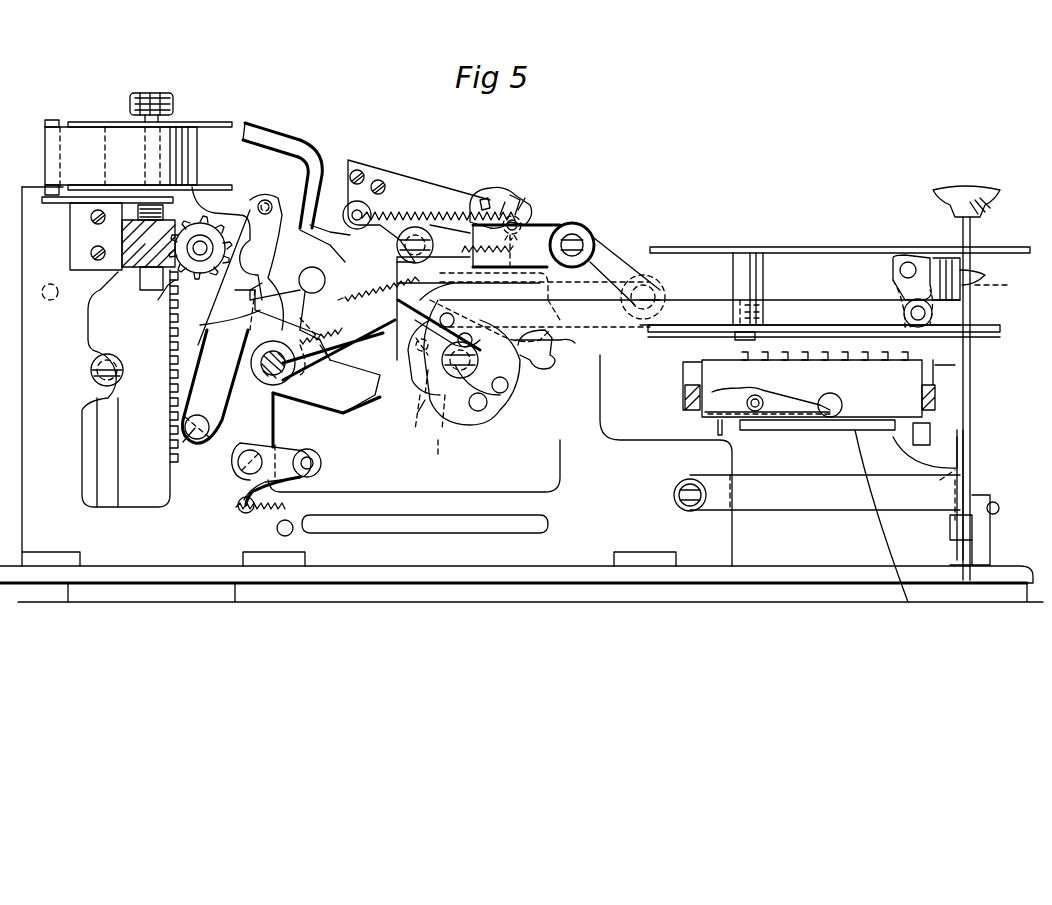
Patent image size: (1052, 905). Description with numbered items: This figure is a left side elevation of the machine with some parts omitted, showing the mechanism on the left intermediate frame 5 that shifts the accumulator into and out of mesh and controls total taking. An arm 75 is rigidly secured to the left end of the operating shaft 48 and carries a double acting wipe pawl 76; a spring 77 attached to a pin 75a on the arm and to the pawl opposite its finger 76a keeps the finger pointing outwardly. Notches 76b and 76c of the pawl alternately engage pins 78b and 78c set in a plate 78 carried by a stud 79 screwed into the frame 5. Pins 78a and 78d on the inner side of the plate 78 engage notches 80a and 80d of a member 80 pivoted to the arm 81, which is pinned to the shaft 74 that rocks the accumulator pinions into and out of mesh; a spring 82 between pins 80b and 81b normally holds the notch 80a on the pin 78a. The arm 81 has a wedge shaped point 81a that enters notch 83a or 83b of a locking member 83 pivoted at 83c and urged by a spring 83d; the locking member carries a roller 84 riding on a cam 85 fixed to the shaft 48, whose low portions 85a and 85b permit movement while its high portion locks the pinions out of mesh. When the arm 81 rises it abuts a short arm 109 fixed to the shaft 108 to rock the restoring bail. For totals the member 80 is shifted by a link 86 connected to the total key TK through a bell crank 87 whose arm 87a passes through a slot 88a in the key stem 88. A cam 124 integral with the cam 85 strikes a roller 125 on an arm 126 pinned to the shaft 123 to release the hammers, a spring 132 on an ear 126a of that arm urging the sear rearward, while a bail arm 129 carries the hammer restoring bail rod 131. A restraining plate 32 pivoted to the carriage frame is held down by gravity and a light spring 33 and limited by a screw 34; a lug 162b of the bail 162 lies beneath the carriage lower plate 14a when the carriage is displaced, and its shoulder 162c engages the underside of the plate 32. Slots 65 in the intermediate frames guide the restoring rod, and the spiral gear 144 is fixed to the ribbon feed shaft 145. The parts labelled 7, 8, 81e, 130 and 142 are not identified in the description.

The intermediate frame 5 is at (568, 590).
The upper rail 7 is at (698, 247).
The lower rail 8 is at (668, 333).
The lower plate of the carriage frame 14a is at (893, 410).
The restraining plate 32 is at (883, 527).
The light spring 33 is at (838, 412).
The screw 34 is at (845, 425).
The operating shaft 48 is at (268, 388).
The slot 65 is at (510, 533).
The shaft 74 is at (580, 245).
The arm 75 is at (330, 395).
The pin 75a is at (340, 379).
The double acting wipe pawl 76 is at (420, 310).
The finger 76a is at (505, 385).
The notch 76b is at (500, 285).
The notch 76c is at (420, 390).
The spring 77 is at (390, 275).
The plate 78 is at (439, 325).
The pin 78a is at (428, 400).
The pin 78b is at (545, 312).
The pin 78c is at (490, 408).
The pin 78d is at (540, 365).
The stud 79 is at (460, 380).
The member 80 is at (455, 225).
The notch 80a is at (434, 452).
The pin 80b is at (470, 222).
The notch 80d is at (560, 348).
The arm 81 is at (575, 215).
The wedge shaped point 81a is at (395, 215).
The pin 81b is at (520, 225).
The spring 81e is at (520, 228).
The spring 82 is at (612, 213).
The locking member 83 is at (315, 225).
The notch 83a is at (335, 262).
The notch 83b is at (340, 235).
The pivot 83c is at (370, 305).
The spring 83d is at (438, 225).
The roller 84 is at (308, 266).
The cam 85 is at (215, 335).
The lower portion of cam 85a is at (245, 308).
The lower portion of cam 85b is at (219, 319).
The link 86 is at (800, 310).
The bell crank 87 is at (900, 283).
The arm of bell crank 87a is at (985, 275).
The stem of total key 88 is at (968, 300).
The slot 88a is at (1007, 290).
The shaft 108 is at (515, 200).
The short arm 109 is at (505, 212).
The shaft 123 is at (240, 465).
The cam 124 is at (350, 405).
The roller 125 is at (322, 465).
The arm 126 is at (295, 480).
The ear 126a is at (237, 505).
The bail arm 129 is at (195, 403).
The pin 130 is at (185, 428).
The hammer restoring bail rod 131 is at (250, 195).
The spring 132 is at (258, 520).
The ribbon spool 142 is at (145, 268).
The spiral gear 144 is at (190, 262).
The ribbon feed shaft 145 is at (200, 262).
The bail 162 is at (960, 470).
The lug 162b is at (930, 433).
The shoulder 162c is at (960, 455).
The total key TK is at (948, 200).